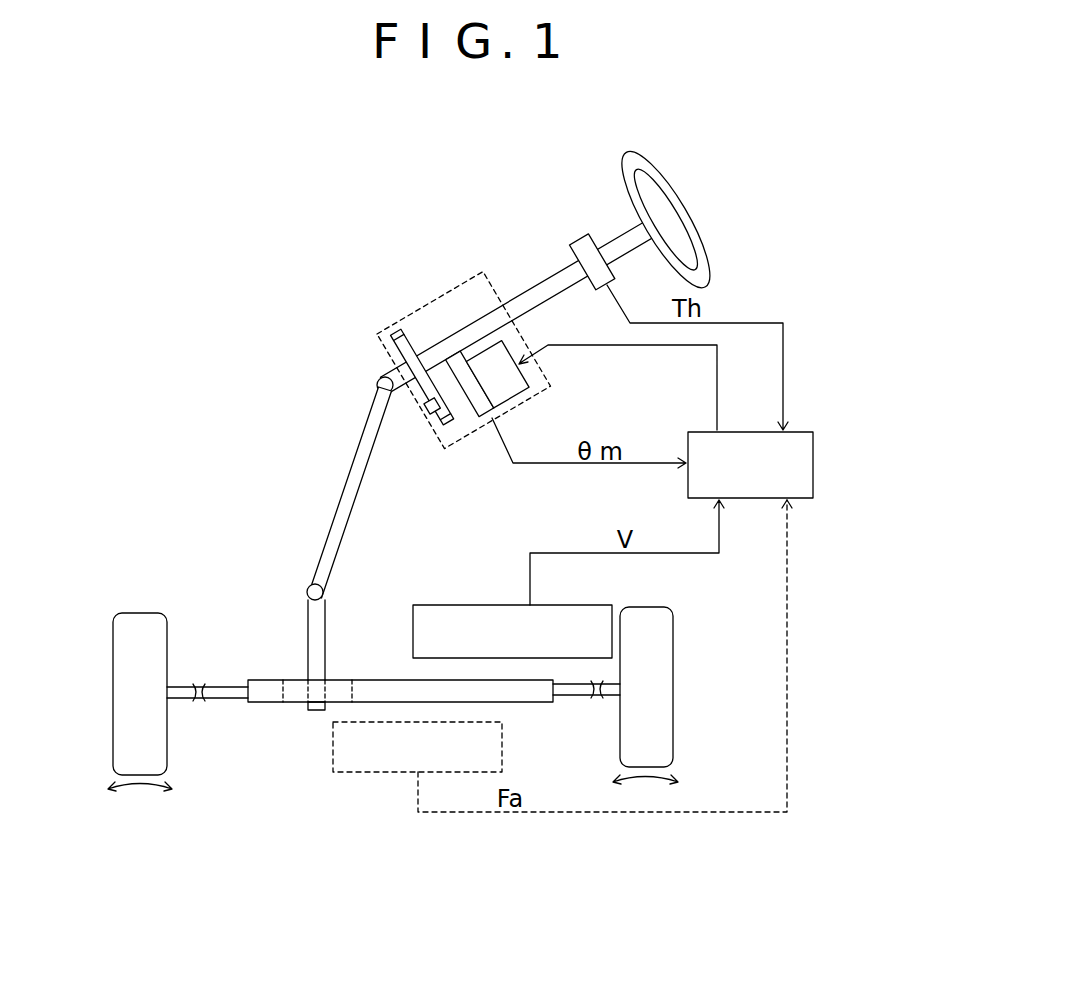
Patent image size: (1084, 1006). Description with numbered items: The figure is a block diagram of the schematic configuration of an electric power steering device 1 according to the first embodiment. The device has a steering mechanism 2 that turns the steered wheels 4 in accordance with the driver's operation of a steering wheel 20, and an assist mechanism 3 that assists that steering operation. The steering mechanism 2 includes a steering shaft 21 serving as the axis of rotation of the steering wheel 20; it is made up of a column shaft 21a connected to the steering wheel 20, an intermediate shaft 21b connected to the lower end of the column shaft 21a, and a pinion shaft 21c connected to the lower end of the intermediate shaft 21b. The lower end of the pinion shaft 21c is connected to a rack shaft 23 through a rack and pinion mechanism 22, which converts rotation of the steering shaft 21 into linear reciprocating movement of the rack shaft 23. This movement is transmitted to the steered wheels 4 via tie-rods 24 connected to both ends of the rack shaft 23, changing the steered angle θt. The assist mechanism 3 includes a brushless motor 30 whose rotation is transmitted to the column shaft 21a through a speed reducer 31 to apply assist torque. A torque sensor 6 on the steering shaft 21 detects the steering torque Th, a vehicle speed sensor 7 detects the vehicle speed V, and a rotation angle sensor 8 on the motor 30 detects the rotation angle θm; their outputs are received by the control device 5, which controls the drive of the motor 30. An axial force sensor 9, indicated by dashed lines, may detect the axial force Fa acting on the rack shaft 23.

The electric power steering device 1 is at (326, 285).
The steering mechanism 2 is at (520, 240).
The assist mechanism 3 is at (442, 296).
The steered wheels 4 is at (141, 612).
The control device 5 is at (691, 431).
The torque sensor 6 is at (578, 243).
The vehicle speed sensor 7 is at (436, 604).
The rotation angle sensor 8 is at (474, 420).
The axial force sensor 9 is at (332, 742).
The steering wheel 20 is at (692, 208).
The steering shaft 21 is at (303, 471).
The column shaft 21a is at (380, 377).
The intermediate shaft 21b is at (347, 472).
The pinion shaft 21c is at (277, 580).
The rack and pinion mechanism 22 is at (360, 679).
The rack shaft 23 is at (398, 679).
The tie-rods 24 is at (228, 700).
The motor 30 is at (543, 383).
The speed reducer 31 is at (430, 404).